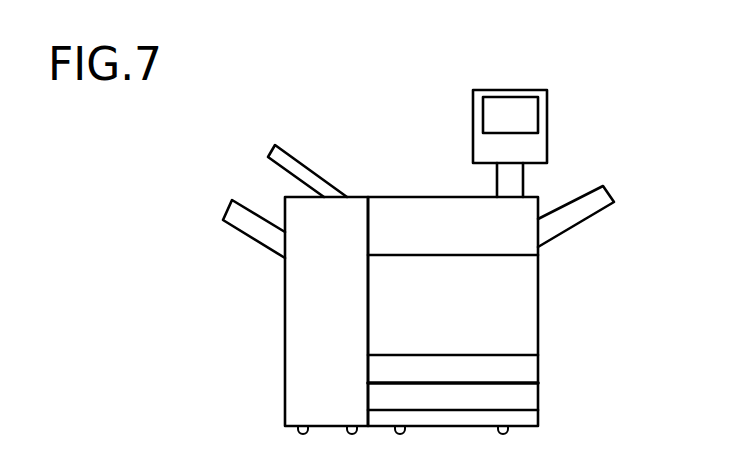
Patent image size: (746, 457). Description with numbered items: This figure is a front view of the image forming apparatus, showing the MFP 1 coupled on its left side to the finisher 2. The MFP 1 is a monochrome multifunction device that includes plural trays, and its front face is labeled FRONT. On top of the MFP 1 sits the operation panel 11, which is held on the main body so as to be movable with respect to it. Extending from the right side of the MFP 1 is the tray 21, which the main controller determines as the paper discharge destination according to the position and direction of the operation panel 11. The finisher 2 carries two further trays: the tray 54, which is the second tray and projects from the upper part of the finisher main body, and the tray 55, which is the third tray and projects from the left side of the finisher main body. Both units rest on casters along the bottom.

The MFP 1 is at (542, 368).
The finisher 2 is at (282, 362).
The operation panel 11 is at (532, 89).
The tray 21 is at (614, 194).
The tray 54 is at (298, 159).
The tray 55 is at (250, 208).